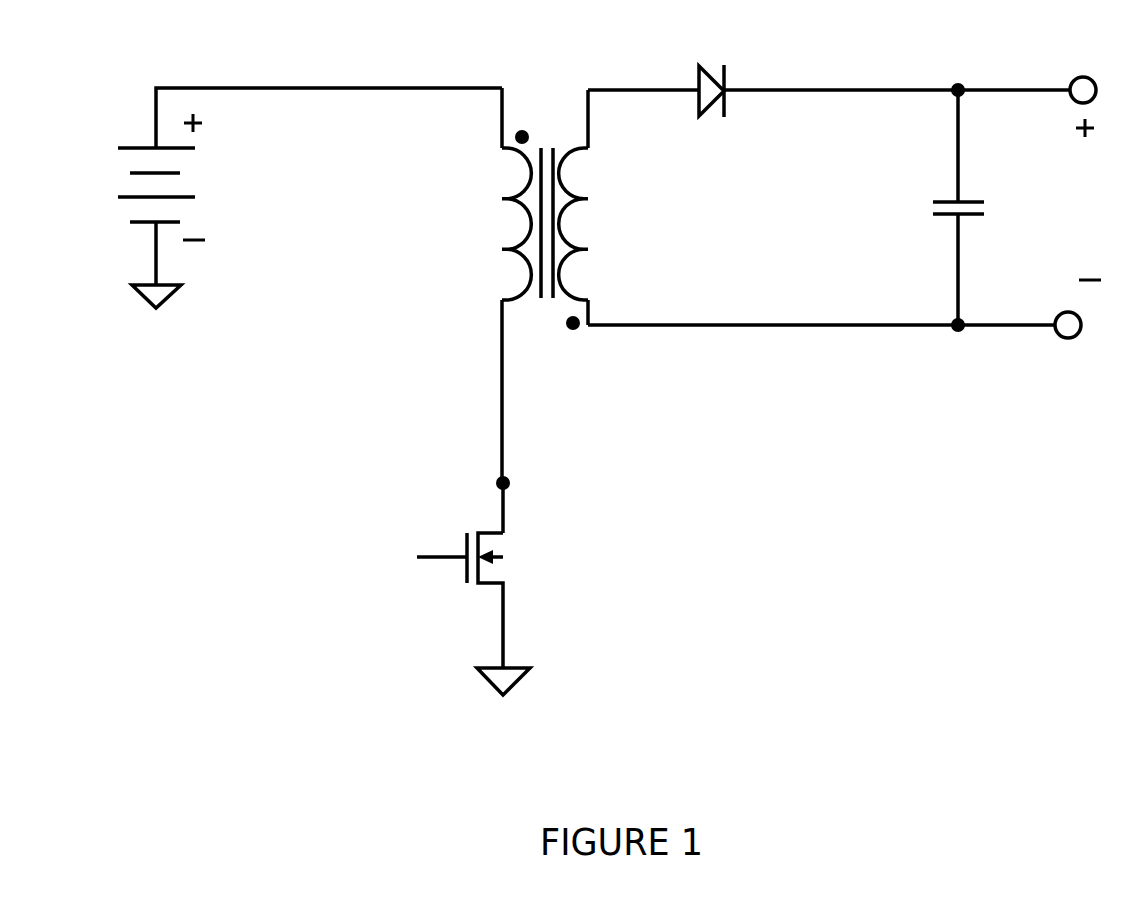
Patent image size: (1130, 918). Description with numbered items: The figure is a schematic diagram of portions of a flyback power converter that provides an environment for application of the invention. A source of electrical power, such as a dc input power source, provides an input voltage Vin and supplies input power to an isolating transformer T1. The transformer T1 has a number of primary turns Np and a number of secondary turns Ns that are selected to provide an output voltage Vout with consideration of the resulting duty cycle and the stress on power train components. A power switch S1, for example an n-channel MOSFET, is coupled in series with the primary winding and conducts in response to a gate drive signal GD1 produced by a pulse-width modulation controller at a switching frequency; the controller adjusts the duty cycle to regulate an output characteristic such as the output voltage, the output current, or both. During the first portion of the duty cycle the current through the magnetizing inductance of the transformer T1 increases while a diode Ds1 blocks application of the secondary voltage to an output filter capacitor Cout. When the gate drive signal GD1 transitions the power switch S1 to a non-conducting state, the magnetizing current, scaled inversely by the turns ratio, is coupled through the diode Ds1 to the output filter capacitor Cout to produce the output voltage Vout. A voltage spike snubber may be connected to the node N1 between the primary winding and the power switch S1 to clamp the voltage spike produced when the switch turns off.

The input voltage Vin is at (310, 198).
The isolating transformer T1 is at (543, 209).
The primary turns Np is at (481, 194).
The secondary turns Ns is at (607, 210).
The diode Ds1 is at (773, 66).
The output filter capacitor Cout is at (786, 207).
The output voltage Vout is at (1040, 207).
The node N1 is at (480, 498).
The power switch S1 is at (510, 614).
The gate drive signal GD1 is at (429, 582).